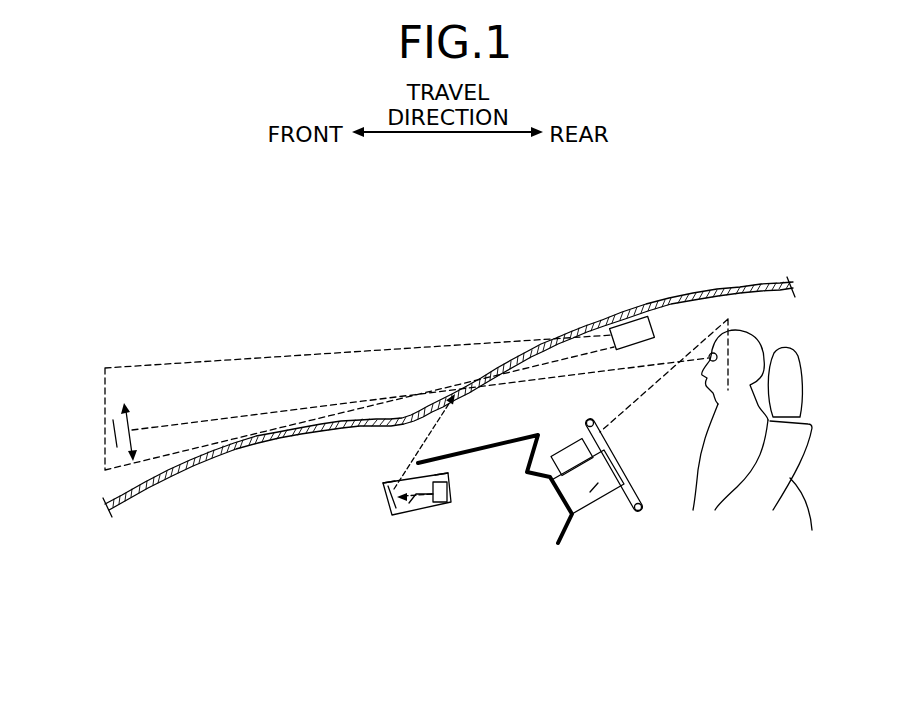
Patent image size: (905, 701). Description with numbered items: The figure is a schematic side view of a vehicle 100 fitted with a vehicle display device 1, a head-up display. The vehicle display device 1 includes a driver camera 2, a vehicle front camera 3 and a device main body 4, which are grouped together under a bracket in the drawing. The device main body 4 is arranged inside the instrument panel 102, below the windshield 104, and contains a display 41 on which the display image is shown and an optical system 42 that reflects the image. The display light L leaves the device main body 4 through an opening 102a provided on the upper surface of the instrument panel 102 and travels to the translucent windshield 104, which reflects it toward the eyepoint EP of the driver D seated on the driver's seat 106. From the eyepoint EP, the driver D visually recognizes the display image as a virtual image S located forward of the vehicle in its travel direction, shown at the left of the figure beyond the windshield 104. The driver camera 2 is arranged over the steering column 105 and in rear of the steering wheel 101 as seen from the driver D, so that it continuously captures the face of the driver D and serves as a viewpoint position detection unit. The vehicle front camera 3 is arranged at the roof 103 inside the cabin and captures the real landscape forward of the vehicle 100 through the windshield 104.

The vehicle display device 1 is at (590, 226).
The driver camera 2 is at (567, 447).
The vehicle front camera 3 is at (633, 322).
The device main body 4 is at (405, 445).
The display 41 is at (438, 506).
The optical system 42 is at (388, 510).
The vehicle 100 is at (254, 292).
The steering wheel 101 is at (630, 493).
The instrument panel 102 is at (471, 449).
The opening 102a is at (397, 462).
The roof 103 is at (666, 303).
The windshield 104 is at (514, 360).
The steering column 105 is at (590, 492).
The driver's seat 106 is at (812, 530).
The driver D is at (746, 334).
The eyepoint EP is at (708, 348).
The display light L is at (404, 500).
The virtual image S is at (113, 440).